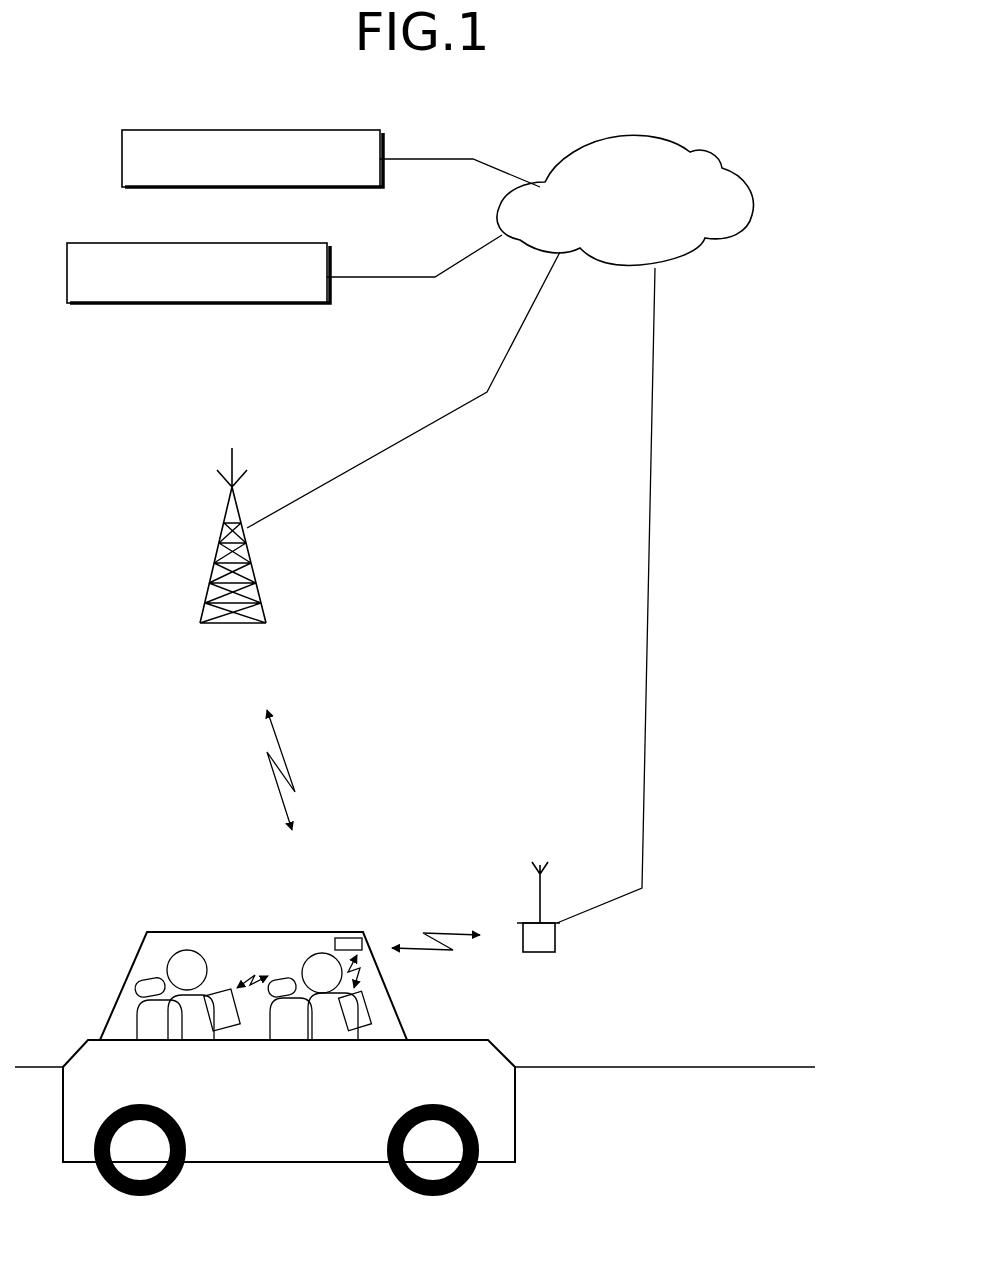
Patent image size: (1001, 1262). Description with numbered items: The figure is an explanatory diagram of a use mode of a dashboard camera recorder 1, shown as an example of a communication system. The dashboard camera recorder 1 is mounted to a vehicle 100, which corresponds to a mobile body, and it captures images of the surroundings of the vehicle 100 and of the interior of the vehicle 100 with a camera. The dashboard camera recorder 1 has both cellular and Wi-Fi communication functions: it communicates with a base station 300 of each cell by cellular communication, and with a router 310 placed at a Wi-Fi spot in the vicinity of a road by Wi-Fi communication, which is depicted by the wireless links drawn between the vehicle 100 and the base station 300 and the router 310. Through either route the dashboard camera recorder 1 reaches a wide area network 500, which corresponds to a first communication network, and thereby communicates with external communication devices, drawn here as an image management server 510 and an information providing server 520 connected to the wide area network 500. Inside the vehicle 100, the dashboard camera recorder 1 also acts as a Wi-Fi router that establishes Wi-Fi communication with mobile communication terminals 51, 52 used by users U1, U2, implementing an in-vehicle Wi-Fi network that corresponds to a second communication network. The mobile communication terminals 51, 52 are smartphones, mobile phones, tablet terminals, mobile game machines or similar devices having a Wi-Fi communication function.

The dashboard camera recorder 1 is at (351, 938).
The mobile communication terminal 51 is at (368, 1012).
The mobile communication terminal 52 is at (223, 992).
The vehicle 100 is at (133, 962).
The base station 300 is at (220, 523).
The router 310 is at (555, 940).
The wide area network 500 is at (713, 158).
The image management server 510 is at (245, 130).
The information providing server 520 is at (190, 243).
The user U1 is at (313, 955).
The user U2 is at (185, 950).